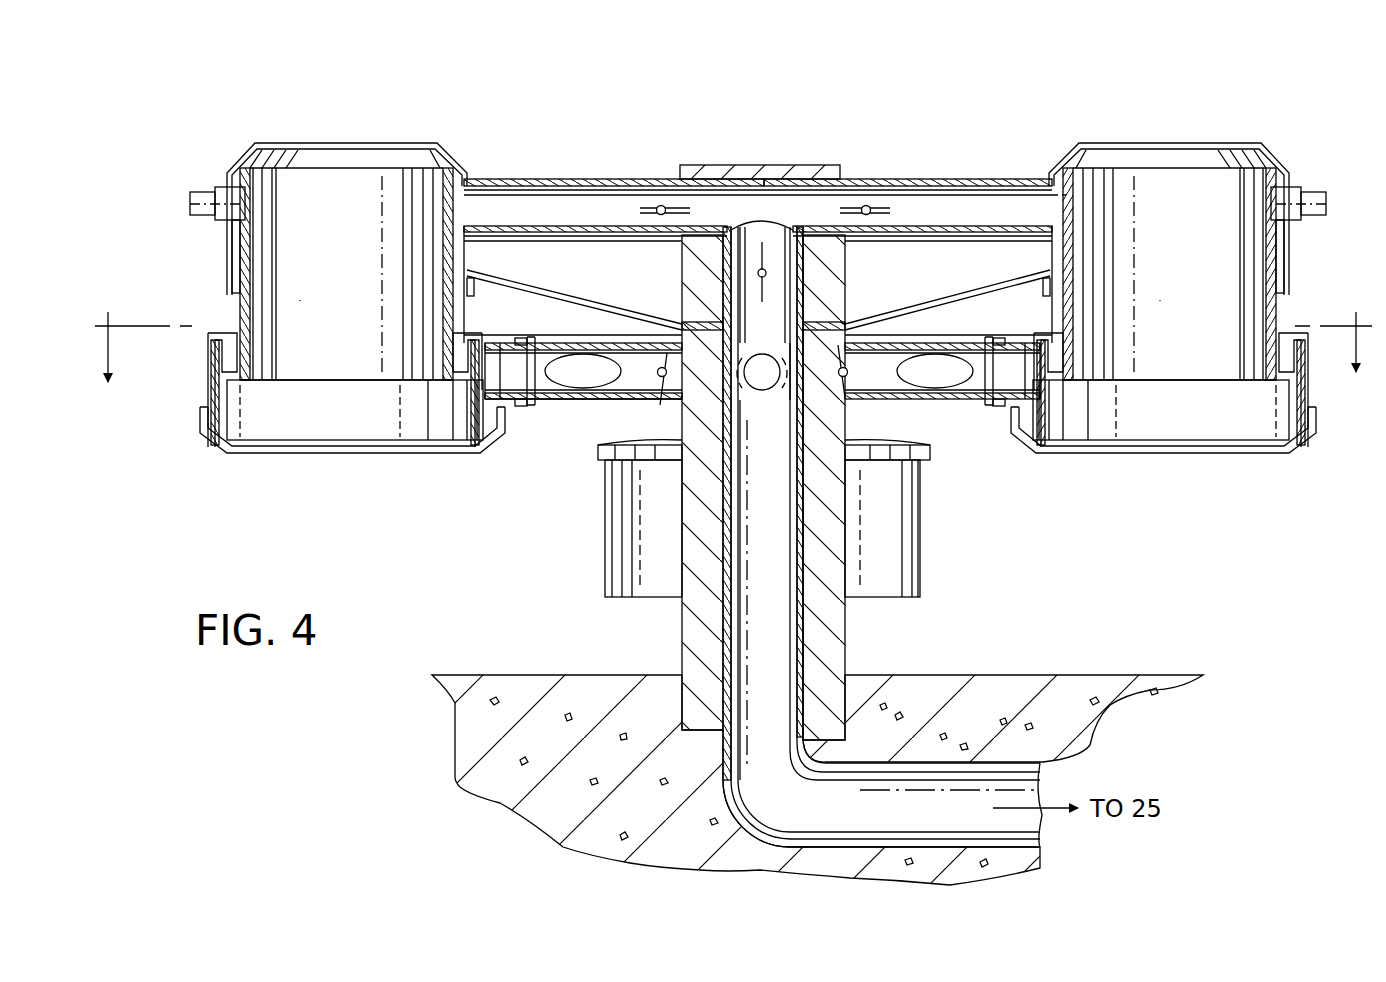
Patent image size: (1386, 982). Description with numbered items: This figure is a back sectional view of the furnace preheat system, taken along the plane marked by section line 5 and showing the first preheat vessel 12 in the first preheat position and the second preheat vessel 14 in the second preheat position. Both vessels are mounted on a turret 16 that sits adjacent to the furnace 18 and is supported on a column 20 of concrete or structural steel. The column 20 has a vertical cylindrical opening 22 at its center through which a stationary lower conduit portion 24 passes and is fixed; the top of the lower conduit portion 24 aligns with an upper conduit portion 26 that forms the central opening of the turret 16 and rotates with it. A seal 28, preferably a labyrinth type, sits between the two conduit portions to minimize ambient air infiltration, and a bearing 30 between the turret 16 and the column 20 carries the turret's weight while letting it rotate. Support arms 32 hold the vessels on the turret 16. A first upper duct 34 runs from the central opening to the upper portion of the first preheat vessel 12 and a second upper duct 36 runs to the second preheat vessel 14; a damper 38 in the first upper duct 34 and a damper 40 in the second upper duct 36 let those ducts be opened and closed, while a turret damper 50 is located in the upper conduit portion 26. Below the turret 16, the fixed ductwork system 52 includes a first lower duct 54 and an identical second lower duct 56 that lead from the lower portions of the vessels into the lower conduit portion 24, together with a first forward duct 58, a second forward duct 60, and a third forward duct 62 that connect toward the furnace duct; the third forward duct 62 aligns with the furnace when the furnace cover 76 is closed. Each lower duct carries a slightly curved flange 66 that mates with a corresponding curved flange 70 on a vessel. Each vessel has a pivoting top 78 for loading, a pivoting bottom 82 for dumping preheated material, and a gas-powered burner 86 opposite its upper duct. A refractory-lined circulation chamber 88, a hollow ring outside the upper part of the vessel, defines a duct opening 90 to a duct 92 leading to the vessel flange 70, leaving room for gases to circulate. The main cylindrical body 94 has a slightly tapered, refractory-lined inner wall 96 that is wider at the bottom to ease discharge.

The section line 5- 5 is at (733, 360).
The first preheat vessel 12 is at (1135, 142).
The second preheat vessel 14 is at (322, 142).
The turret 16 is at (781, 165).
The furnace 18 is at (920, 529).
The column 20 is at (682, 645).
The vertical cylindrical opening 22 is at (803, 620).
The lower conduit portion 24 is at (803, 652).
The upper conduit portion 26 is at (790, 240).
The seal 28 is at (700, 330).
The bearing 30 is at (848, 326).
The support arms 32 is at (644, 283).
The first upper duct 34 is at (985, 179).
The second upper duct 36 is at (566, 179).
The damper or valve 38 is at (882, 207).
The damper or valve 40 is at (659, 207).
The turret damper 50 is at (750, 300).
The fixed ductwork system 52 is at (610, 402).
The first lower duct 54 is at (963, 345).
The second lower duct 56 is at (596, 350).
The first forward duct 58 is at (952, 384).
The second forward duct 60 is at (600, 384).
The third forward duct 62 is at (762, 391).
The flange 66 is at (522, 338).
The curved flange 70 is at (530, 337).
The furnace cover 76 is at (930, 458).
The top 78 is at (383, 142).
The bottom 82 is at (312, 456).
The gas-powered burner 86 is at (202, 188).
The circulation chamber 88 is at (212, 352).
The duct opening 90 is at (480, 393).
The duct 92 is at (495, 405).
The cylindrical body 94 is at (228, 302).
The inner wall 96 is at (447, 285).